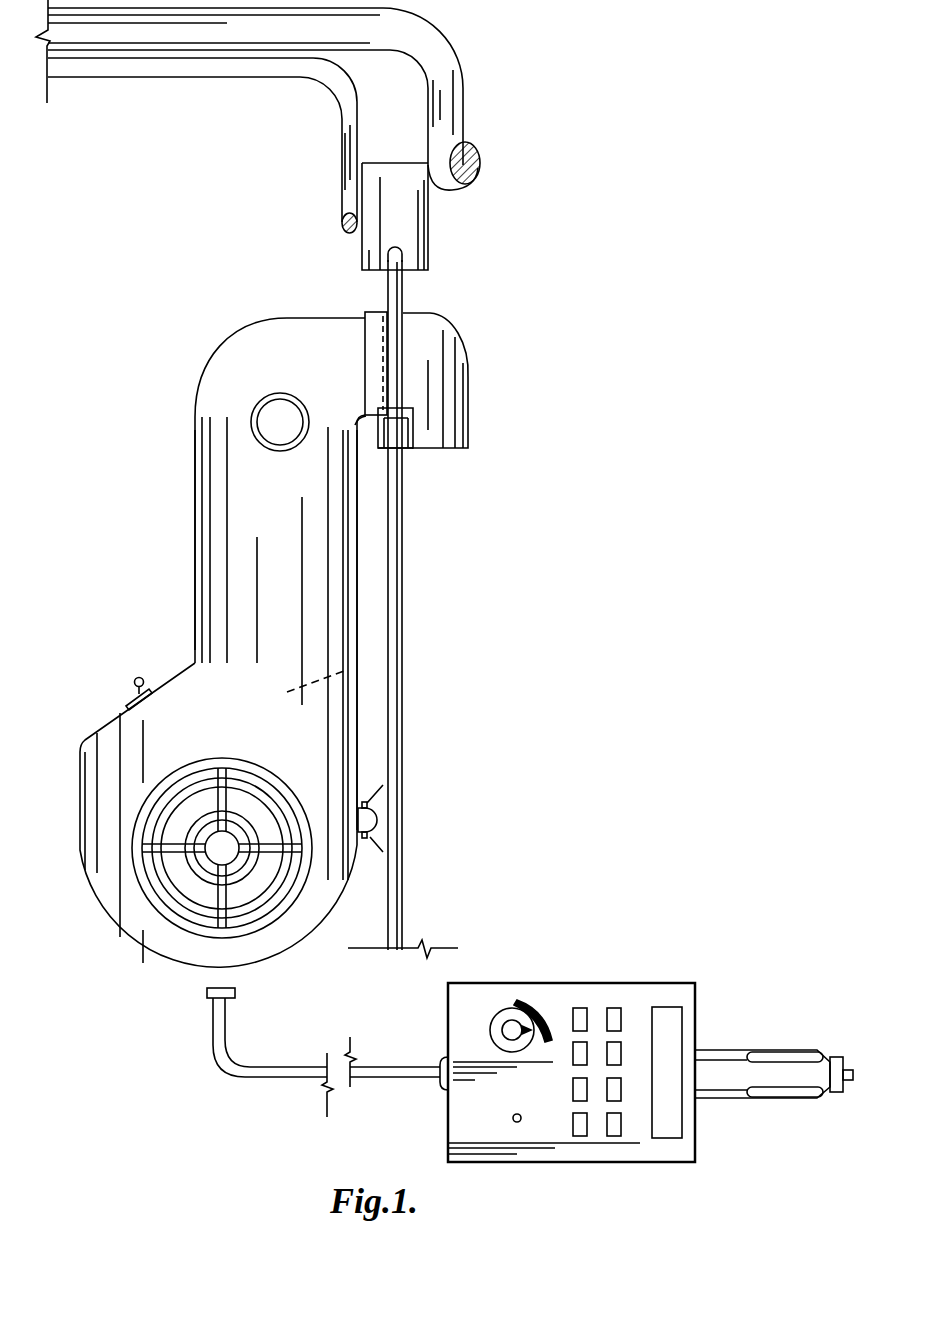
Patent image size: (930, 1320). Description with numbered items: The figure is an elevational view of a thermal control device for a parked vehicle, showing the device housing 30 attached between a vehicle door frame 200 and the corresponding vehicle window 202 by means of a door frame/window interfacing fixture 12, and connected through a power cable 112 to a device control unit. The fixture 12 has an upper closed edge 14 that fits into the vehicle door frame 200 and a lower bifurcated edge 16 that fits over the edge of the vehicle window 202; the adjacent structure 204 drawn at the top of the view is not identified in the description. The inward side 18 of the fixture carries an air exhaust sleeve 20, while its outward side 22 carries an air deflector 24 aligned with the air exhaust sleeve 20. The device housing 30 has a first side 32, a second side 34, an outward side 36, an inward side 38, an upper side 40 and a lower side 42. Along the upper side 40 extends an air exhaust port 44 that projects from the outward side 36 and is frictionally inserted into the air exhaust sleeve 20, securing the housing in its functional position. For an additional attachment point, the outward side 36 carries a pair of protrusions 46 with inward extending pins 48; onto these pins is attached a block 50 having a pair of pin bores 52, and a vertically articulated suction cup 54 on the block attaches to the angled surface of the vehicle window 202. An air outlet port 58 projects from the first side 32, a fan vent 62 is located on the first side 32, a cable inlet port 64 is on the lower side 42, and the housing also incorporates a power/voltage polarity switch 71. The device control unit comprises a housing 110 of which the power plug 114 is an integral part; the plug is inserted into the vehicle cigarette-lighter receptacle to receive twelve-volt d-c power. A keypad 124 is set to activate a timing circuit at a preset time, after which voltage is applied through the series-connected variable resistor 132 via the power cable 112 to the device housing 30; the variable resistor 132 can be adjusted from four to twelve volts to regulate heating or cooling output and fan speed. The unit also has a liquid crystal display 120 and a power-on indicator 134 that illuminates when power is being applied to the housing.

The door frame/window interfacing fixture 12 is at (486, 362).
The upper closed edge 14 is at (403, 248).
The lower bifurcated edge 16 is at (408, 448).
The inward side 18 is at (365, 345).
The air exhaust sleeve 20 is at (378, 312).
The outward side 22 is at (395, 292).
The air deflector 24 is at (462, 440).
The device housing 30 is at (174, 510).
The first side 32 is at (287, 758).
The second side 34 is at (343, 672).
The outward side 36 is at (357, 610).
The inward side 38 is at (193, 568).
The upper side 40 is at (313, 318).
The lower side 42 is at (193, 987).
The air exhaust port 44 is at (380, 398).
The protrusions 46 is at (464, 839).
The inward extending pins 48 is at (464, 839).
The block 50 is at (373, 812).
The pin bores 52 is at (370, 820).
The suction cup 54 is at (383, 838).
The air outlet port 58 is at (250, 425).
The fan vent 62 is at (148, 867).
The cable inlet port 64 is at (233, 993).
The power/voltage polarity switch 71 is at (130, 690).
The housing 110 is at (695, 1007).
The power cable 112 is at (268, 1075).
The power plug 114 is at (793, 1038).
The liquid crystal display 120 is at (665, 1125).
The keypad 124 is at (597, 1007).
The variable resistor 132 is at (510, 1015).
The power-on indicator 134 is at (517, 1122).
The vehicle door frame 200 is at (407, 223).
The vehicle window 202 is at (393, 725).
The pipe 204 is at (350, 153).